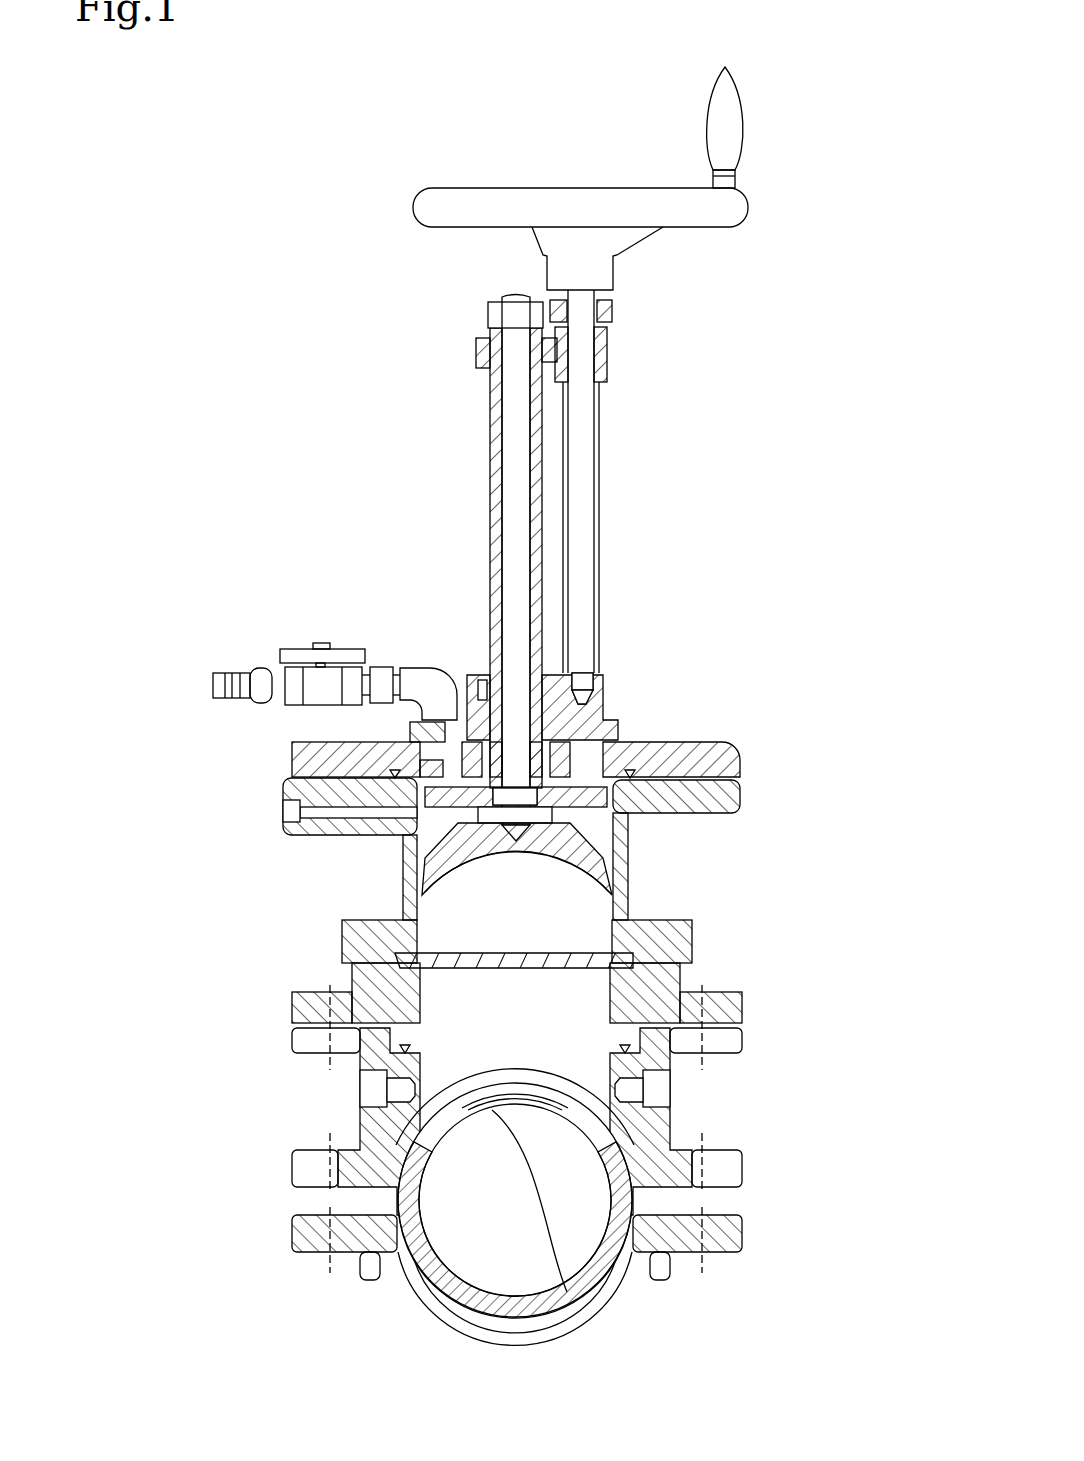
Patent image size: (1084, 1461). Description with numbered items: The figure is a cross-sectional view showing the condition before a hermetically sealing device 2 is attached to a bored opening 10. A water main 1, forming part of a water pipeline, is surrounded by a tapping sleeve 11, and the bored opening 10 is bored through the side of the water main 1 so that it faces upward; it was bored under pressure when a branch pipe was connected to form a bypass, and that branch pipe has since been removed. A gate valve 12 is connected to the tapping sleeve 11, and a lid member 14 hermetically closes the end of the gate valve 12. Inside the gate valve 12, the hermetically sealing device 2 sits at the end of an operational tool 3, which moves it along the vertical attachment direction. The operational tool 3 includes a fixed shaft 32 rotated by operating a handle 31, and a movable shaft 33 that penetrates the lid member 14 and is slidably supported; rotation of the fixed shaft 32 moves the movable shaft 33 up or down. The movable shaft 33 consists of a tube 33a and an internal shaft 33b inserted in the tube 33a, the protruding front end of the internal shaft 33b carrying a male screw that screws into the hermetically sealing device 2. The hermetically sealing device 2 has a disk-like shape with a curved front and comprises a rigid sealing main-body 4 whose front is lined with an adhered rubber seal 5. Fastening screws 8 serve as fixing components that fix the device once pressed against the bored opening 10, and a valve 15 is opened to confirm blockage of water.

The water main 1 is at (460, 1292).
The hermetically sealing device 2 is at (598, 853).
The operational tool 3 is at (603, 464).
The sealing main-body 4 is at (489, 855).
The rubber seal 5 is at (605, 895).
The fastening screws 8 is at (385, 1090).
The bored opening 10 is at (567, 1292).
The tapping sleeve 11 is at (395, 1285).
The gate valve 12 is at (313, 993).
The lid member 14 is at (292, 757).
The valve for confirmation of blockage of water 15 is at (304, 645).
The handle 31 is at (710, 108).
The fixed shaft 32 is at (600, 586).
The movable shaft 33 is at (490, 385).
The tube 33a is at (490, 470).
The internal shaft 33b is at (508, 545).